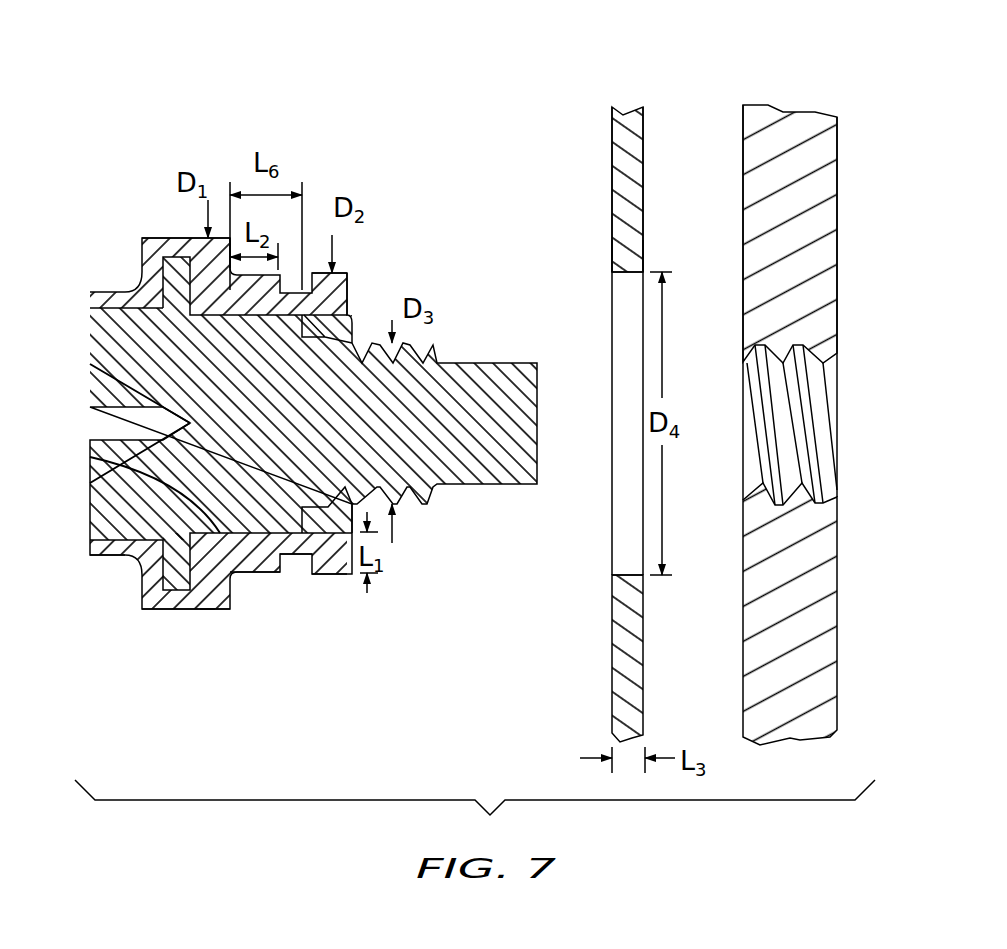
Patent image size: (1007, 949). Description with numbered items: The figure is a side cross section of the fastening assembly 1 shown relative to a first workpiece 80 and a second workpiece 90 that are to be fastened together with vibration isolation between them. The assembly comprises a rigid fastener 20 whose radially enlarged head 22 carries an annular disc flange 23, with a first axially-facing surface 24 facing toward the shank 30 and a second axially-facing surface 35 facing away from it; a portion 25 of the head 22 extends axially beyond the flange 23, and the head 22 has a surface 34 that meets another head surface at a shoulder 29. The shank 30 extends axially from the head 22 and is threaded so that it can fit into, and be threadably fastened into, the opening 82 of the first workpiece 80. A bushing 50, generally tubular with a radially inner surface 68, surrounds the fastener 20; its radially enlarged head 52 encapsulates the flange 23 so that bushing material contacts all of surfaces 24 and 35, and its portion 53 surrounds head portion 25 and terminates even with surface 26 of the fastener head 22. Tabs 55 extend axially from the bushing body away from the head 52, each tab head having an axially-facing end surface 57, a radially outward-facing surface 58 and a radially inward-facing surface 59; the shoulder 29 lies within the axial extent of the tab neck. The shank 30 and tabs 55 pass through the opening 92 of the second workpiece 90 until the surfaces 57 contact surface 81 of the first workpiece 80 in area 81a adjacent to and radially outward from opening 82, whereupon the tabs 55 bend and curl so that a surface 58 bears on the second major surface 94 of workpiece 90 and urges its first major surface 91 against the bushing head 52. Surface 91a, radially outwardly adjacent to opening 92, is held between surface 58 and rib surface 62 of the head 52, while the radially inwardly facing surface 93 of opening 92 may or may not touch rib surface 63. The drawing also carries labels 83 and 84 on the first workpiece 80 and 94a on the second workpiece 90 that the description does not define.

The fastening assembly 1 is at (192, 68).
The fastener 20 is at (289, 423).
The head 22 is at (107, 508).
The flange 23 is at (178, 593).
The first axially-facing surface 24 is at (202, 250).
The portion 25 is at (100, 323).
The surface 26 is at (100, 490).
The shoulder 29 is at (304, 535).
The shank 30 is at (398, 425).
The surface 34 is at (207, 610).
The second axially-facing surface 35 is at (163, 278).
The bushing 50 is at (145, 609).
The radially enlarged head 52 is at (148, 272).
The portion 53 is at (110, 543).
The tab 55 is at (312, 307).
The axially-facing surface 57 is at (347, 283).
The radially outward-facing surface 58 is at (347, 270).
The radially inward-facing surface 59 is at (332, 574).
The surface 62 is at (237, 575).
The surface 63 is at (258, 575).
The radially inner surface 68 is at (120, 467).
The first workpiece 80 is at (812, 110).
The surface 81 is at (745, 106).
The area 81a is at (743, 300).
The opening 82 is at (808, 455).
The nut thread 83 is at (805, 390).
The nut outer face 84 is at (840, 135).
The second workpiece 90 is at (625, 110).
The first major surface 91 is at (612, 160).
The surface 91a is at (612, 255).
The opening 92 is at (612, 525).
The radially inwardly facing surface 93 is at (612, 278).
The second major surface 94 is at (645, 140).
The washer second face portion 94a is at (645, 258).